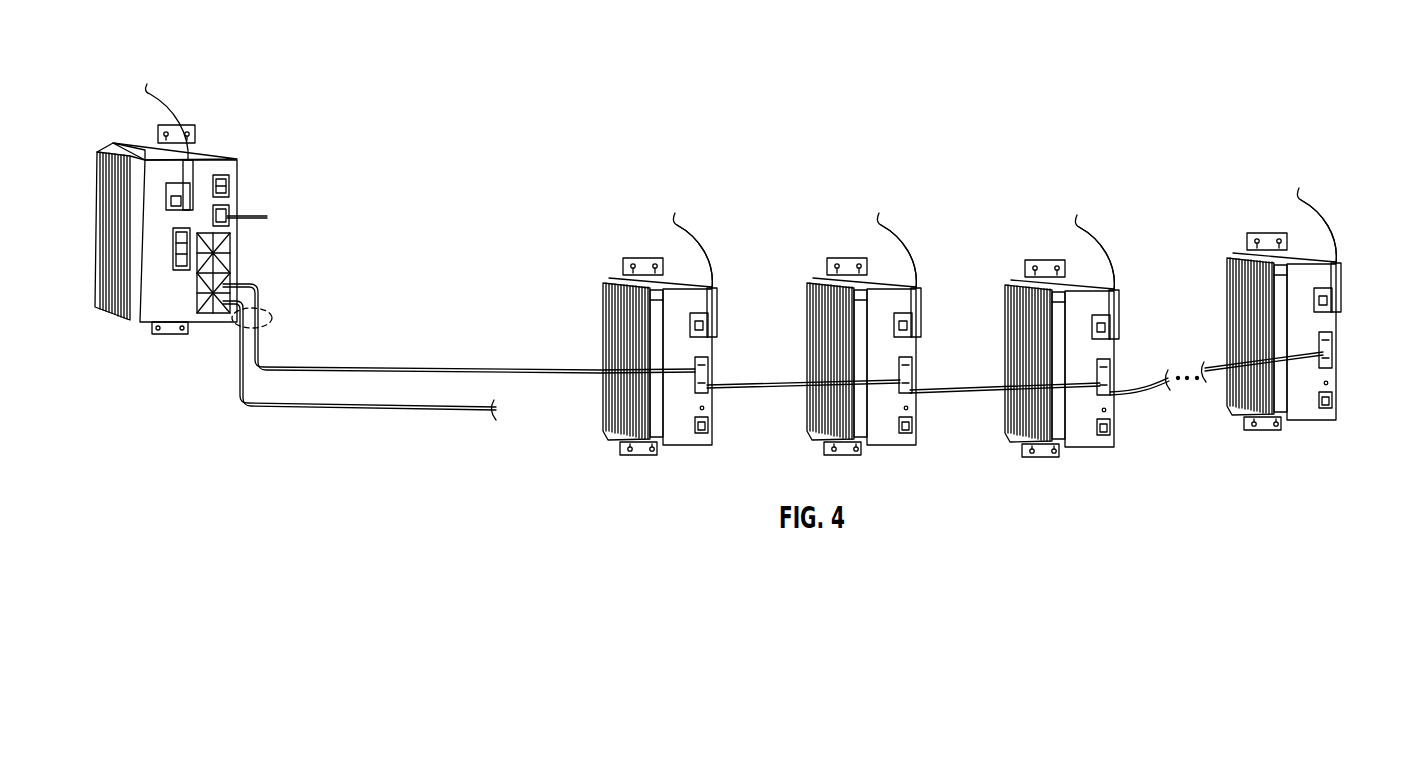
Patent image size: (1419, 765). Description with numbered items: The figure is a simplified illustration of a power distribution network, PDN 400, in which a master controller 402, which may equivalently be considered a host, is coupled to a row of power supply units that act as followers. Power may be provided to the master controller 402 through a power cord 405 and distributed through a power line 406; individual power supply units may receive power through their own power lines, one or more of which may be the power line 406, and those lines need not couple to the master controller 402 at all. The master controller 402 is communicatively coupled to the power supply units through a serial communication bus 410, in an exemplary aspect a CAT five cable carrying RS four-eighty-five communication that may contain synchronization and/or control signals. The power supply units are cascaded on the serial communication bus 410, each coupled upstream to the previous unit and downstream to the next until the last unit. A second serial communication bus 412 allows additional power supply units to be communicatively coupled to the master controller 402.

The PDN 400 is at (488, 141).
The master controller 402 is at (217, 153).
The power cord 405 is at (170, 107).
The power line 406 is at (247, 209).
The serial communication bus 410 is at (462, 371).
The second serial communication bus 412 is at (316, 406).